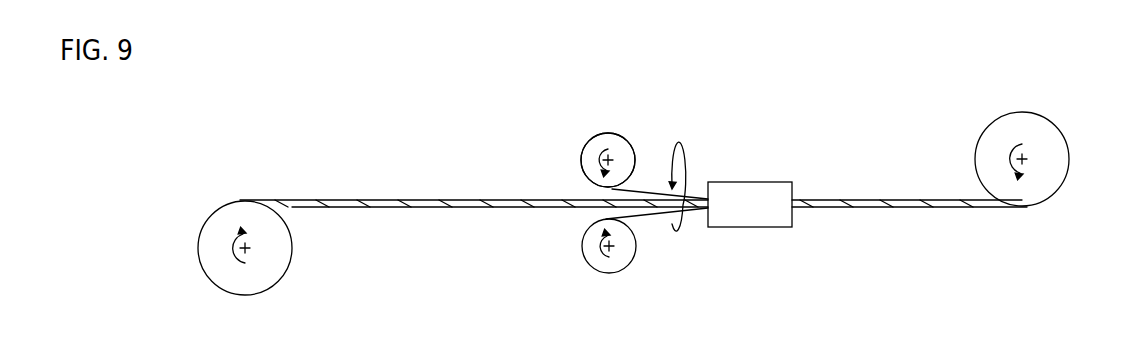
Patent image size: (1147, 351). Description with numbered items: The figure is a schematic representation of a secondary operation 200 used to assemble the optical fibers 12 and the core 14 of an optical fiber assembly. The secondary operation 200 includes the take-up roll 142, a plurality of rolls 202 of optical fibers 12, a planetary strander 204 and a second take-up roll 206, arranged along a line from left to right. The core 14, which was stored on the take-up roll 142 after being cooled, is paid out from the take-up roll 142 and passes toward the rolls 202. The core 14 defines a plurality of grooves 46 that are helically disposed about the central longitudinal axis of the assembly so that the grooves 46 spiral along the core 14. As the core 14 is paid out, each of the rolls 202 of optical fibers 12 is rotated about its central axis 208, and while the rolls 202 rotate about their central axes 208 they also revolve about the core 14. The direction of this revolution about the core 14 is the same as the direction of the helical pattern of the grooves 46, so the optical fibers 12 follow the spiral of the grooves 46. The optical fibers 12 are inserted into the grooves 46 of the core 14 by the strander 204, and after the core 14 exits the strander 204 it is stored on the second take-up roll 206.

The secondary operation 200 is at (272, 135).
The take-up roll 142 is at (297, 290).
The core 14 is at (463, 199).
The grooves 46 is at (441, 208).
The rolls of optical fibers 202 is at (627, 137).
The central axis 208 is at (617, 158).
The optical fiber 12 is at (647, 215).
The planetary strander 204 is at (757, 181).
The second take-up roll 206 is at (1072, 148).